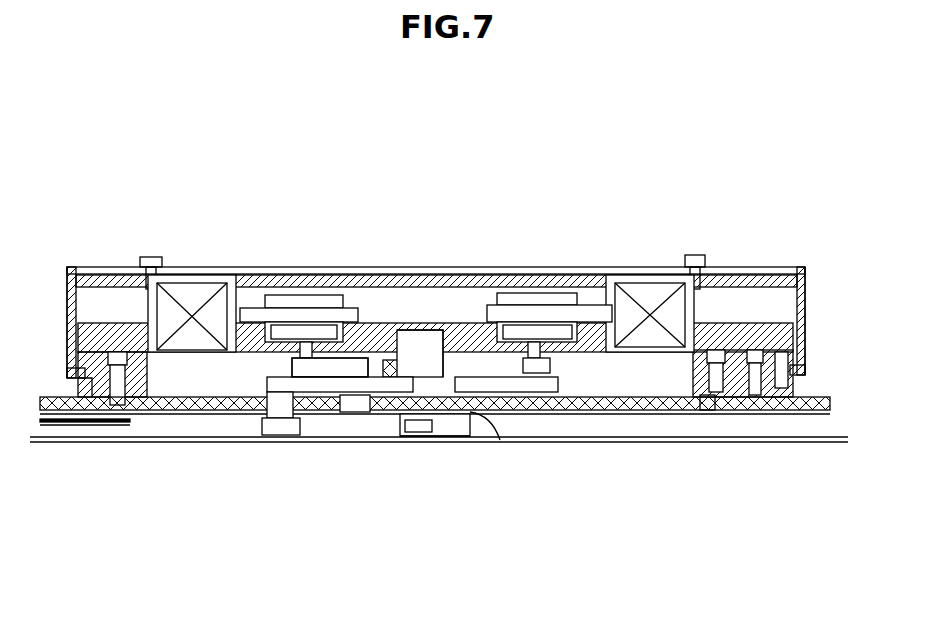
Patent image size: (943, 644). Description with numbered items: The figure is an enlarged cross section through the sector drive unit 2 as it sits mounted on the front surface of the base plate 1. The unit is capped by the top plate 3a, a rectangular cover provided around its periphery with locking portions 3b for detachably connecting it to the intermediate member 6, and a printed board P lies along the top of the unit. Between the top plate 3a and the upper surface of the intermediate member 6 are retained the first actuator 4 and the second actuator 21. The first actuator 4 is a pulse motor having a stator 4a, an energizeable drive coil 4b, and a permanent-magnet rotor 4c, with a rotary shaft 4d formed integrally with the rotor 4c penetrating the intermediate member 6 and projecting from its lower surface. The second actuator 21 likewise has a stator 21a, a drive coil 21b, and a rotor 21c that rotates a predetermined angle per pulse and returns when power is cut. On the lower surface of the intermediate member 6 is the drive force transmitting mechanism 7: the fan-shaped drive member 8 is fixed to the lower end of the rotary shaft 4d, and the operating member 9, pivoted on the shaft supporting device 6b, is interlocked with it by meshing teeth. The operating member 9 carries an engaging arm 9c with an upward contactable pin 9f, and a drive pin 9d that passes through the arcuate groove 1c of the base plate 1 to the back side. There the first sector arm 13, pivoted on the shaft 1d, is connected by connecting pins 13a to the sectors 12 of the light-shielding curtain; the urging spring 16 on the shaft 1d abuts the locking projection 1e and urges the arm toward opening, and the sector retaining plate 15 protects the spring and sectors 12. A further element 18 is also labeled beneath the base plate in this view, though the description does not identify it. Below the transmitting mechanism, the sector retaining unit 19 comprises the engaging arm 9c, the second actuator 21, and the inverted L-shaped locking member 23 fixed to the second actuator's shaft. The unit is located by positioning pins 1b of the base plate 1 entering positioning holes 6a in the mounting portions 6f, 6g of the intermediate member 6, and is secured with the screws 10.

The base plate 1 is at (655, 418).
The positioning pin 1b is at (710, 410).
The arcuate groove 1c is at (262, 420).
The shaft 1d is at (415, 437).
The locking projection 1e is at (497, 438).
The sector drive unit 2 is at (434, 249).
The top plate 3a is at (112, 282).
The locking portions 3b is at (67, 335).
The first actuator 4 is at (533, 332).
The stator 4a is at (490, 320).
The drive coil 4b is at (650, 290).
The rotor 4c is at (565, 305).
The rotary shaft 4d is at (596, 410).
The intermediate member 6 is at (378, 318).
The positioning holes 6a is at (715, 396).
The shaft supporting device 6b is at (405, 340).
The mounting portion 6f is at (682, 410).
The mounting portion 6g is at (78, 385).
The drive force transmitting mechanism 7 is at (433, 202).
The drive member 8 is at (452, 360).
The operating member 9 is at (440, 345).
The engaging arm 9c is at (383, 368).
The drive pin 9d is at (272, 436).
The contactable pin 9f is at (485, 413).
The screws 10 is at (118, 406).
The sectors 12 is at (55, 427).
The first sector arm 13 is at (175, 416).
The connecting pins 13a is at (80, 422).
The sector retaining plate 15 is at (555, 416).
The urging spring 16 is at (448, 434).
The element 18 is at (376, 413).
The sector retaining unit 19 is at (365, 558).
The second actuator 21 is at (349, 378).
The stator 21a is at (265, 296).
The drive coil 21b is at (185, 283).
The rotor 21c is at (335, 300).
The locking member 23 is at (298, 400).
The printed board P is at (740, 266).